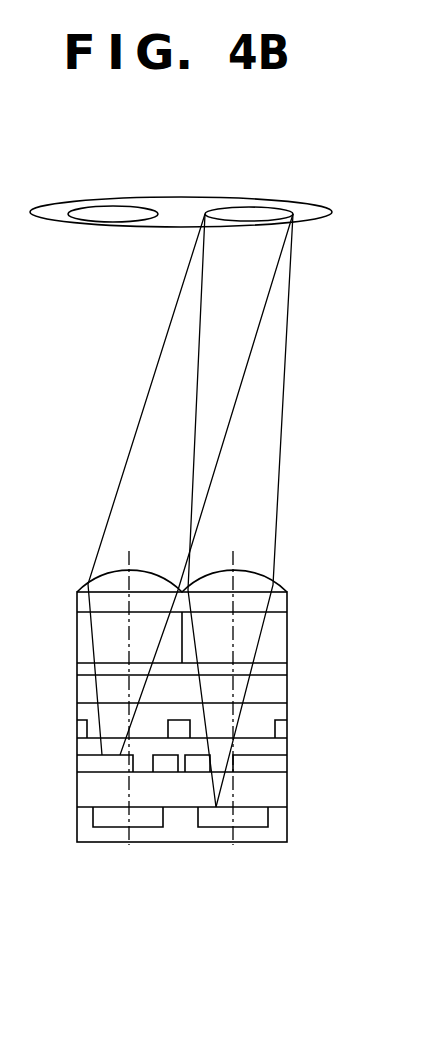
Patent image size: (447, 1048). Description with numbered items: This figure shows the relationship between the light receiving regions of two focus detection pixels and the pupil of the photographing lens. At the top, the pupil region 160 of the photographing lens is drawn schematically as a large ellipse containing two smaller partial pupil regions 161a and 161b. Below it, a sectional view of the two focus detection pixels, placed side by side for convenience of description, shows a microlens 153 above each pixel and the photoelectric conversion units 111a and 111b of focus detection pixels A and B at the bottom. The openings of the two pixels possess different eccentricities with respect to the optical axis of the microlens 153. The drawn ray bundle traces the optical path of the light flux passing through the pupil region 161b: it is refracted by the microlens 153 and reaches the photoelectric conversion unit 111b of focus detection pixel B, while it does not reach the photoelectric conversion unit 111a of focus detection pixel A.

The pupil region of the photographing lens 160 is at (179, 196).
The pupil region 161a is at (87, 222).
The pupil region 161b is at (272, 207).
The microlens 153 is at (245, 572).
The photoelectric conversion unit 111a is at (110, 817).
The photoelectric conversion unit 111b is at (248, 817).